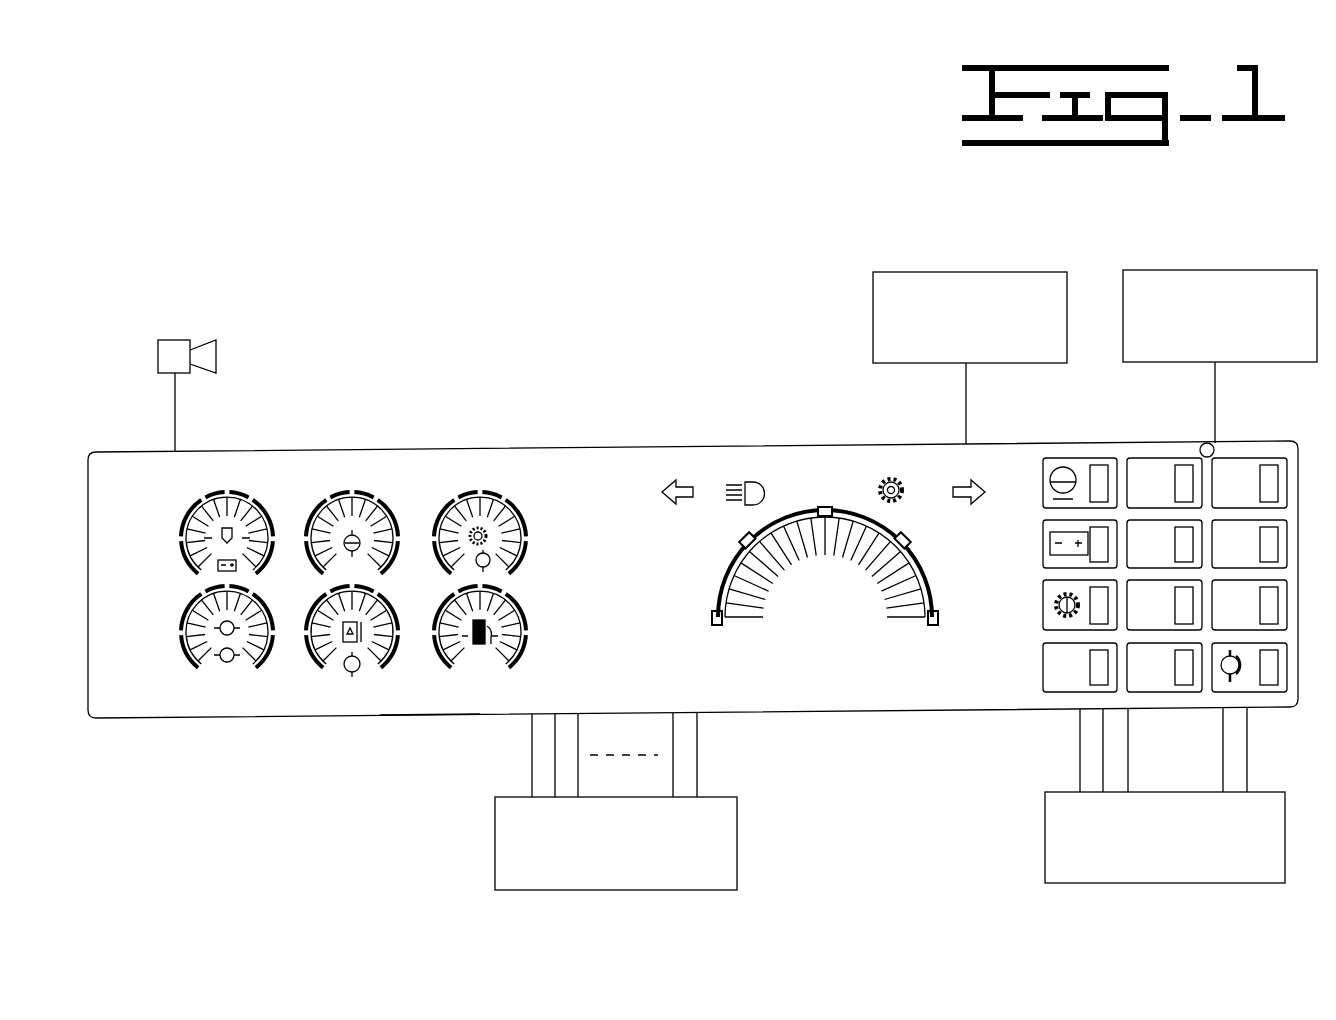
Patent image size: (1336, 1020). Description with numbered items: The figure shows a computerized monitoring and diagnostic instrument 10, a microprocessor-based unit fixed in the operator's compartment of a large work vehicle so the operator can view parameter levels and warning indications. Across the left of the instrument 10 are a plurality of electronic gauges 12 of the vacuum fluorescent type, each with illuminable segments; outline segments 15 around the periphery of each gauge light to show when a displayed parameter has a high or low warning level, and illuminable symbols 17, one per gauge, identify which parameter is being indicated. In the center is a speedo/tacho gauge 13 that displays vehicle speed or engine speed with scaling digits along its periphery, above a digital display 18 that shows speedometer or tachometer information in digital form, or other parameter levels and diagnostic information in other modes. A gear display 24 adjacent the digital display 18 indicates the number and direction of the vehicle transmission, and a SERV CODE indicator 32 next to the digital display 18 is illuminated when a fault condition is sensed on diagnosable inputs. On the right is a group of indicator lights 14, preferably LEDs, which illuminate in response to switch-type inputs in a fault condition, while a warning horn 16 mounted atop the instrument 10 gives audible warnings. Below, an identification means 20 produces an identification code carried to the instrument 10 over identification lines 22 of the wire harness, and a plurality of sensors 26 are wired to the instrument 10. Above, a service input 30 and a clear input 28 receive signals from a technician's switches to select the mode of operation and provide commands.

The instrument 10 is at (525, 416).
The electronic gauges 12 is at (302, 473).
The speedo/tacho gauge 13 is at (693, 560).
The indicator lights 14 is at (1259, 438).
The outline segments 15 is at (534, 614).
The warning horn 16 is at (172, 340).
The illuminable symbols 17 is at (328, 694).
The digital display 18 is at (827, 688).
The identification means 20 is at (650, 890).
The identification lines 22 is at (422, 777).
The gear display 24 is at (803, 622).
The sensors 26 is at (1125, 883).
The clear input 28 is at (1173, 270).
The service input 30 is at (947, 272).
The SERV CODE indicator 32 is at (773, 684).